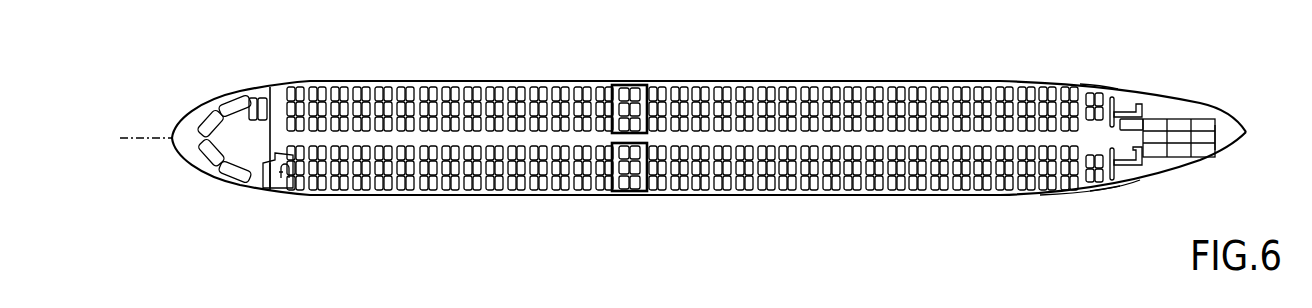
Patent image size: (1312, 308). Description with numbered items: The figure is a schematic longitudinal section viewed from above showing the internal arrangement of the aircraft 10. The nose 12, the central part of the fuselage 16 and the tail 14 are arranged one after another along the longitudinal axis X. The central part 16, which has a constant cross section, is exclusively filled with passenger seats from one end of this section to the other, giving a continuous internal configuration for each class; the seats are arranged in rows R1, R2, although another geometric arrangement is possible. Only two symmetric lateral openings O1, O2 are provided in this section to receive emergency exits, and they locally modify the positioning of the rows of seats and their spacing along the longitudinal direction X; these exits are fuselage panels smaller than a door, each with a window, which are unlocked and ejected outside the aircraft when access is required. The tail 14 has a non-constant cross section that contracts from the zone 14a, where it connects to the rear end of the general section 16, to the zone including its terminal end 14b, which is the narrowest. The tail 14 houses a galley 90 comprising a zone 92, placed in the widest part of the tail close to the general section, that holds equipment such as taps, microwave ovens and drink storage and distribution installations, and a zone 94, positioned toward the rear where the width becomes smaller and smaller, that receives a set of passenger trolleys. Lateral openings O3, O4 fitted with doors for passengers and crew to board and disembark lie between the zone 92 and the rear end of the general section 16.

The aircraft 10 is at (1198, 90).
The nose 12 is at (240, 183).
The tail 14 is at (1208, 110).
The zone connecting to the general section 14a is at (1070, 192).
The terminal end of the tail 14b is at (1247, 140).
The central part of the fuselage 16 is at (728, 199).
The galley 90 is at (1168, 110).
The equipment zone 92 is at (1123, 102).
The trolley zone 94 is at (1220, 135).
The row of seats R1 is at (405, 185).
The row of seats R2 is at (407, 82).
The lateral opening O1 is at (648, 199).
The lateral opening O2 is at (645, 82).
The lateral opening O3 is at (1096, 84).
The lateral opening O4 is at (1103, 194).
The longitudinal axis X is at (134, 138).